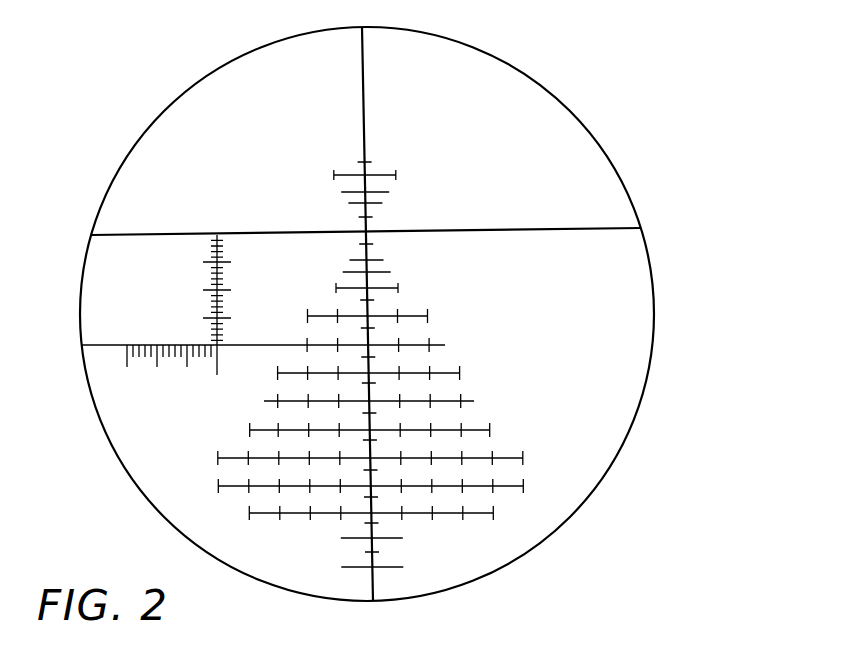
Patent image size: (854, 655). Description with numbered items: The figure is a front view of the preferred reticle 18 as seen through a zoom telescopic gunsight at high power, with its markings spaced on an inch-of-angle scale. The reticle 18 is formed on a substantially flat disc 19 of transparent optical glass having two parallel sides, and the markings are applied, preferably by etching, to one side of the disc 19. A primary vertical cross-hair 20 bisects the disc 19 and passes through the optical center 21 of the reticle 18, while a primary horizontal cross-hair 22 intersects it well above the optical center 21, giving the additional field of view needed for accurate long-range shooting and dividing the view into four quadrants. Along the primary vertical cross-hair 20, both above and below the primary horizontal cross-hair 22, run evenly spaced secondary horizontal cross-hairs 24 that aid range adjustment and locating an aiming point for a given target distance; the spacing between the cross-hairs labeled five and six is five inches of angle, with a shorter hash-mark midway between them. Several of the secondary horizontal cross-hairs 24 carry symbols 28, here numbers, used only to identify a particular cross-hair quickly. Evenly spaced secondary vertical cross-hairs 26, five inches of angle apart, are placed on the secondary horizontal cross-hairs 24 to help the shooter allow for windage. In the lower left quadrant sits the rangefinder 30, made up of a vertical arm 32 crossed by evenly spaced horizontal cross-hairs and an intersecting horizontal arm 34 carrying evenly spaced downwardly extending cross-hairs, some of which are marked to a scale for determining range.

The reticle 18 is at (609, 68).
The disc 19 is at (482, 64).
The primary vertical cross-hair 20 is at (362, 128).
The optical center 21 is at (368, 313).
The primary horizontal cross-hair 22 is at (597, 228).
The secondary horizontal cross-hairs 24 is at (490, 430).
The secondary vertical cross-hairs 26 is at (398, 288).
The symbols 28 is at (580, 477).
The rangefinder 30 is at (118, 287).
The vertical arm 32 is at (241, 270).
The horizontal arm 34 is at (145, 364).